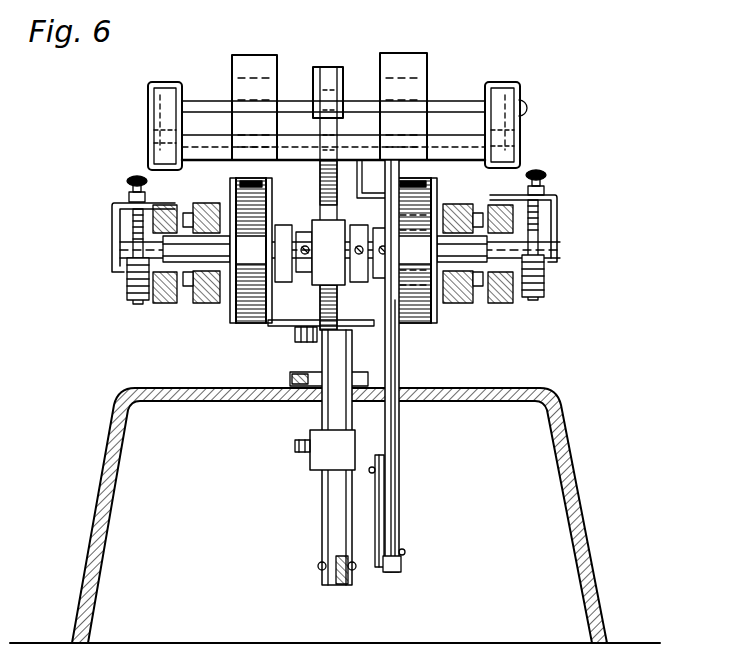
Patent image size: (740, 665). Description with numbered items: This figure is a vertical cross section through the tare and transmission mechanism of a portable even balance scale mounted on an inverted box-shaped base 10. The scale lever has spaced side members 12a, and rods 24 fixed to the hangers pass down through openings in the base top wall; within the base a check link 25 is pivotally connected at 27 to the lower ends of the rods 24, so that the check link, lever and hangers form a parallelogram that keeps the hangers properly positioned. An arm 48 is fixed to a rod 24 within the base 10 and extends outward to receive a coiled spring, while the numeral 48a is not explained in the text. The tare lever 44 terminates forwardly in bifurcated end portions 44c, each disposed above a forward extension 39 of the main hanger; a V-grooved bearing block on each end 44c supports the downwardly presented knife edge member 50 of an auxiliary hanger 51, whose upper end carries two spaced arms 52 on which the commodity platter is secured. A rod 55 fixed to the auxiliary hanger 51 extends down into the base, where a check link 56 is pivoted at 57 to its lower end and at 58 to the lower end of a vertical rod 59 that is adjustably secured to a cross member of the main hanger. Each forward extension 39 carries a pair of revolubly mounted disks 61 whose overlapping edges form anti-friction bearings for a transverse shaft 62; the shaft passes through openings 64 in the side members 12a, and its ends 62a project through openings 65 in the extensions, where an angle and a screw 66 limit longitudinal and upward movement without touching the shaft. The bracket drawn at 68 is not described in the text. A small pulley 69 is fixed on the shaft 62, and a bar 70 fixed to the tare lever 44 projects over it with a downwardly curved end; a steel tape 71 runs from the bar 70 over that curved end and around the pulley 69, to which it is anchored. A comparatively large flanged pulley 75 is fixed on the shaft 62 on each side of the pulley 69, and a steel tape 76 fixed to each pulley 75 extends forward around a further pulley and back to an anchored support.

The base 10 is at (603, 540).
The side members 12a is at (208, 305).
The rods 24 is at (332, 508).
The check link 25 is at (337, 588).
The pivotal connection 27 is at (322, 566).
The forward extensions 39 is at (168, 303).
The tare lever 44 is at (440, 100).
The bifurcated end portions 44c is at (158, 100).
The arm 48 is at (310, 463).
The bracket screw 48a is at (300, 442).
The knife edge member 50 is at (216, 118).
The auxiliary hanger 51 is at (160, 144).
The arms 52 is at (246, 62).
The rod 55 is at (400, 440).
The check link 56 is at (395, 522).
The pivotal connection 57 is at (400, 468).
The pivotal connection 58 is at (394, 575).
The vertical rod 59 is at (395, 515).
The disks 61 is at (135, 302).
The shaft 62 is at (296, 283).
The shaft ends 62a is at (125, 258).
The openings 64 is at (205, 215).
The openings 65 is at (130, 282).
The screw 66 is at (128, 180).
The bracket 68 is at (112, 232).
The small pulley 69 is at (355, 284).
The bar 70 is at (318, 67).
The steel tape 71 is at (337, 67).
The flanged pulley 75 is at (252, 318).
The steel tape 76 is at (248, 182).